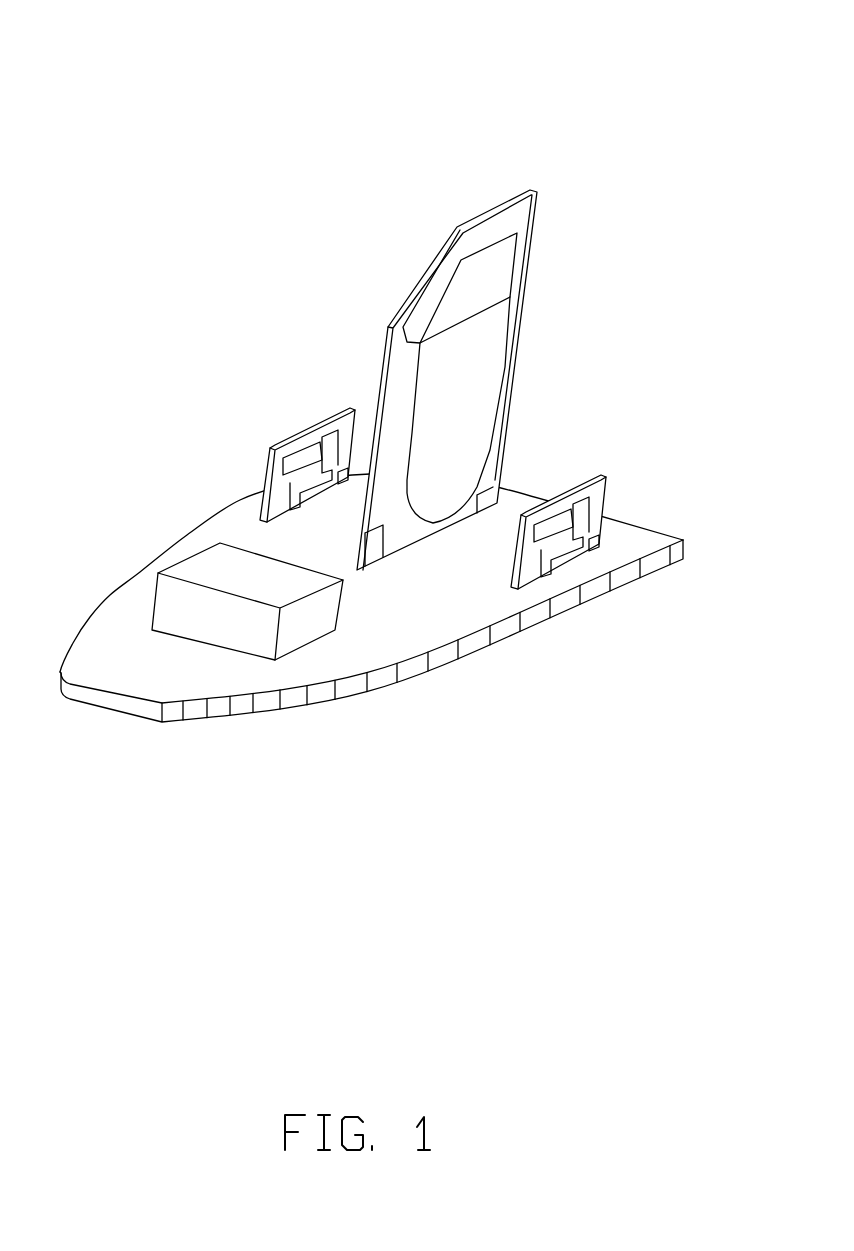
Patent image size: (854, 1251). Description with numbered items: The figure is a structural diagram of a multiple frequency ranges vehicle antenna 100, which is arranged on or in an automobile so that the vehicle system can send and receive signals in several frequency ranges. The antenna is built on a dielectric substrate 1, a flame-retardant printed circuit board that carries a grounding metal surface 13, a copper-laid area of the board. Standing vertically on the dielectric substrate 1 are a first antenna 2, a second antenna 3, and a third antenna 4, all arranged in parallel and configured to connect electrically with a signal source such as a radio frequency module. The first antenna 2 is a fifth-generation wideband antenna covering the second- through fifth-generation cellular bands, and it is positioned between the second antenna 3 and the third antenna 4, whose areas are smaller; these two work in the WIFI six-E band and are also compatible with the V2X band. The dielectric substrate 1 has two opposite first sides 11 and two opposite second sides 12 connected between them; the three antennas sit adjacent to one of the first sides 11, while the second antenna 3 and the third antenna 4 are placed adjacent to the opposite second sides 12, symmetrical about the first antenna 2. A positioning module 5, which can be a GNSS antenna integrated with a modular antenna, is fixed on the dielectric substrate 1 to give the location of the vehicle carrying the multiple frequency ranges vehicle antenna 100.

The multiple frequency ranges vehicle antenna 100 is at (420, 36).
The dielectric substrate 1 is at (371, 609).
The first sides 11 is at (652, 528).
The second sides 12 is at (580, 607).
The grounding metal surface 13 is at (217, 517).
The first antenna 2 is at (525, 223).
The second antenna 3 is at (578, 495).
The third antenna 4 is at (315, 435).
The positioning module 5 is at (192, 570).